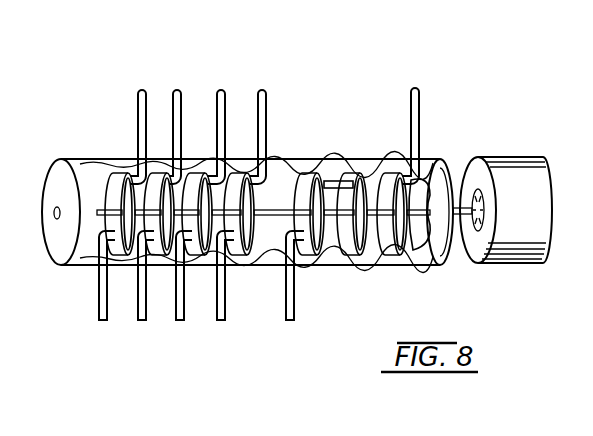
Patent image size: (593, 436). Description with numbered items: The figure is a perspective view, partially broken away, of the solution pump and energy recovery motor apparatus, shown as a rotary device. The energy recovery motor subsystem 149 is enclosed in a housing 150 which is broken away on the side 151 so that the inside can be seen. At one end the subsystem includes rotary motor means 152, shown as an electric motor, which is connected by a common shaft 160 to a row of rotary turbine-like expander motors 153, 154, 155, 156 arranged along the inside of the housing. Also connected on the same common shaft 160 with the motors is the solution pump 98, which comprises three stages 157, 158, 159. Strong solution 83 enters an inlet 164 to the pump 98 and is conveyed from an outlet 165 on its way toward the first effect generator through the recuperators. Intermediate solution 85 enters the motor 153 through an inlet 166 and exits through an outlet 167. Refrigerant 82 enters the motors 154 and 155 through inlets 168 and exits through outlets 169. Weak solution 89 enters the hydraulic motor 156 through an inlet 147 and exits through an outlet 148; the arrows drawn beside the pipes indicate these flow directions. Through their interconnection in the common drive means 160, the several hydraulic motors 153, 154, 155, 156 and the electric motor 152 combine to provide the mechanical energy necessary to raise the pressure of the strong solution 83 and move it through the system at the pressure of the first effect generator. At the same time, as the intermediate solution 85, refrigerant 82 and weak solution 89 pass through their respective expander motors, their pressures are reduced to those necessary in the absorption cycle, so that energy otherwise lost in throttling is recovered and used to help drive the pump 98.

The energy recovery motor subsystem 149 is at (87, 98).
The housing 150 is at (84, 162).
The broken-away side 151 is at (436, 255).
The rotary motor means 152 is at (521, 157).
The expander motor 153 is at (126, 175).
The expander motor 154 is at (161, 178).
The expander motor 155 is at (199, 178).
The hydraulic motor 156 is at (241, 250).
The first pump stage 157 is at (318, 250).
The second pump stage 158 is at (357, 180).
The third pump stage 159 is at (392, 252).
The common shaft 160 is at (284, 170).
The pump inlet 164 is at (420, 99).
The pump outlet 165 is at (295, 306).
The motor inlet 166 is at (97, 290).
The motor outlet 167 is at (137, 119).
The refrigerant inlet 168 is at (177, 312).
The refrigerant outlet 169 is at (184, 100).
The weak solution inlet 147 is at (226, 306).
The weak solution outlet 148 is at (266, 99).
The solution pump 98 is at (397, 138).
The refrigerant 82 is at (177, 73).
The strong solution 83 is at (415, 73).
The intermediate solution 85 is at (142, 83).
The weak solution 89 is at (262, 83).